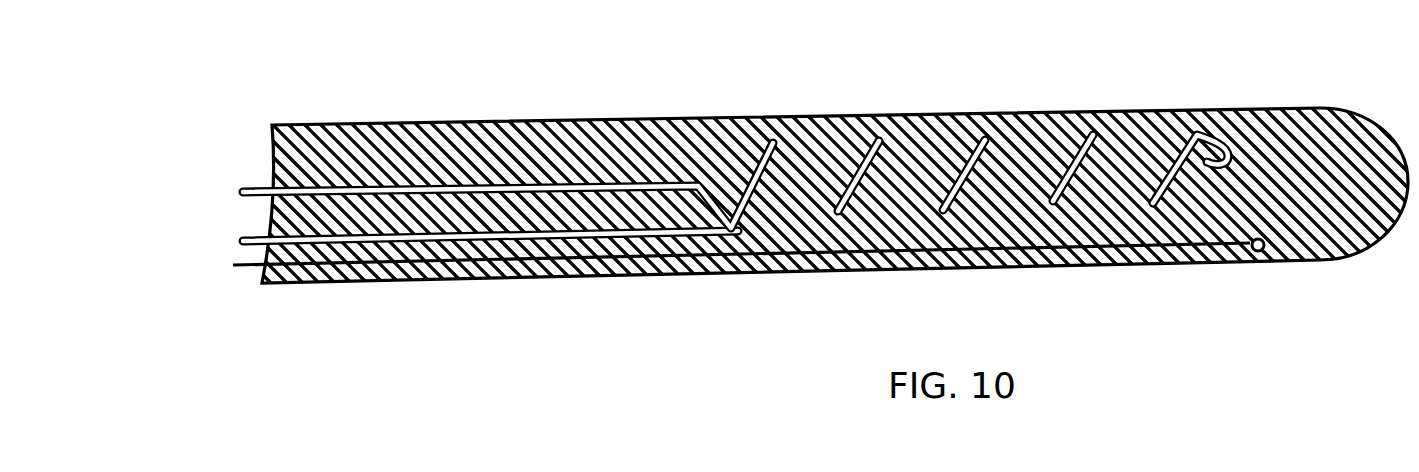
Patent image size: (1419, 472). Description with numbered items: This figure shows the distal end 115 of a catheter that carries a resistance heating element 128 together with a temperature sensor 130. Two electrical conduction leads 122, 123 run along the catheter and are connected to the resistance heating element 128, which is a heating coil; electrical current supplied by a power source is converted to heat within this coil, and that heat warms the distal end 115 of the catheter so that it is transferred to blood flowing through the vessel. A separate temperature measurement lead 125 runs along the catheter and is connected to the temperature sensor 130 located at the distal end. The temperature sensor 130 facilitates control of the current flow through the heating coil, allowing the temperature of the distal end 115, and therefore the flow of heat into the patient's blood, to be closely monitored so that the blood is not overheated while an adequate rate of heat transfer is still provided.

The distal end 115 is at (646, 277).
The electrical conduction lead 122 is at (248, 190).
The electrical conduction lead 123 is at (245, 238).
The temperature measurement lead 125 is at (248, 267).
The resistance heating element 128 is at (1050, 125).
The temperature sensor 130 is at (1250, 252).